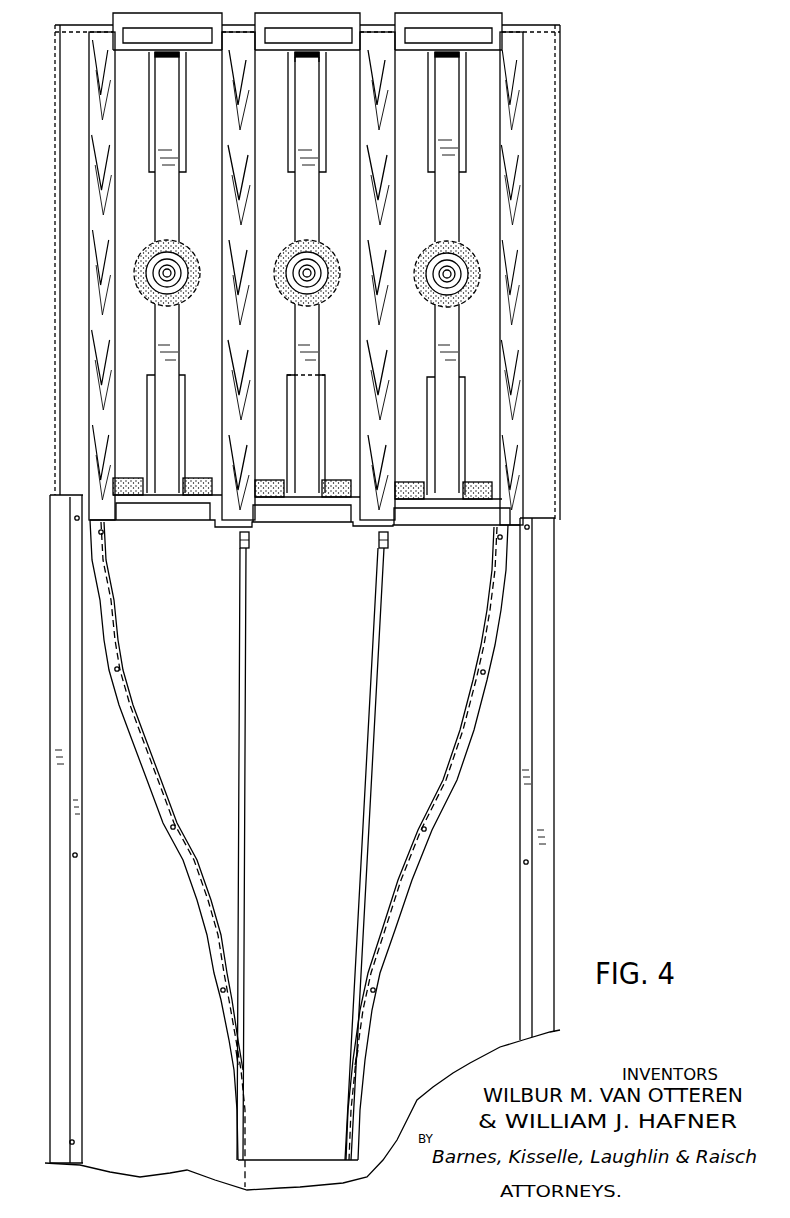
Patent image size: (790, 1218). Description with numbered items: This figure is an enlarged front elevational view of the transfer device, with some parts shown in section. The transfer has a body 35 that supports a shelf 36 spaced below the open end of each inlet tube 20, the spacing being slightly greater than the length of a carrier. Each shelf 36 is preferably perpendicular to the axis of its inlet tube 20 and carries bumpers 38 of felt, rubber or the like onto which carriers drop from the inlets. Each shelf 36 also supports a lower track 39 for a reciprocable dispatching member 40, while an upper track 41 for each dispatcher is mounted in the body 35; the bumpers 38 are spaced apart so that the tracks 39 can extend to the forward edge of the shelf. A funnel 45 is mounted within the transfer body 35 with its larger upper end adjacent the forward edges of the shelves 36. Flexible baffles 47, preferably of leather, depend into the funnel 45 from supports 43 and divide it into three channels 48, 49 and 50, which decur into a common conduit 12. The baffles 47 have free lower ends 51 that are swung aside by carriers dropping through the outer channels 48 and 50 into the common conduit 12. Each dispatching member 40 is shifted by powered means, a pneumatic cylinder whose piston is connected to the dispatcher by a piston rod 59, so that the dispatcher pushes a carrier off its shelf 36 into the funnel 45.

The common conduit 12 is at (242, 1167).
The inlet tube 20 is at (505, 27).
The transfer body 35 is at (556, 740).
The shelf 36 is at (183, 506).
The bumper 38 is at (125, 478).
The lower track 39 is at (151, 497).
The dispatching member 40 is at (180, 128).
The upper track 41 is at (326, 54).
The support 43 is at (248, 548).
The funnel 45 is at (452, 785).
The flexible baffle 47 is at (246, 712).
The outer channel 48 is at (188, 656).
The channel 49 is at (318, 656).
The outer channel 50 is at (427, 842).
The free lower end 51 is at (243, 1062).
The piston rod 59 is at (448, 272).